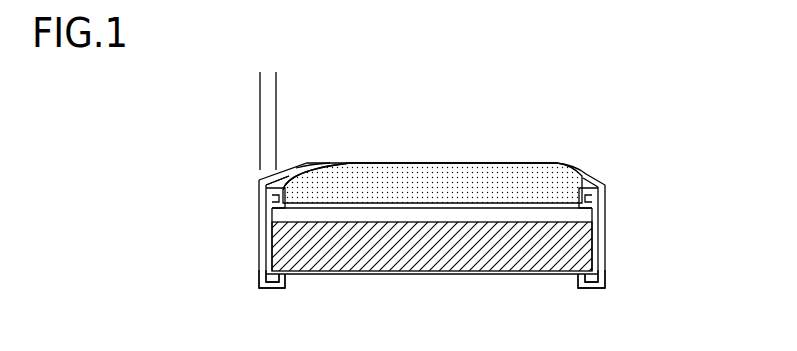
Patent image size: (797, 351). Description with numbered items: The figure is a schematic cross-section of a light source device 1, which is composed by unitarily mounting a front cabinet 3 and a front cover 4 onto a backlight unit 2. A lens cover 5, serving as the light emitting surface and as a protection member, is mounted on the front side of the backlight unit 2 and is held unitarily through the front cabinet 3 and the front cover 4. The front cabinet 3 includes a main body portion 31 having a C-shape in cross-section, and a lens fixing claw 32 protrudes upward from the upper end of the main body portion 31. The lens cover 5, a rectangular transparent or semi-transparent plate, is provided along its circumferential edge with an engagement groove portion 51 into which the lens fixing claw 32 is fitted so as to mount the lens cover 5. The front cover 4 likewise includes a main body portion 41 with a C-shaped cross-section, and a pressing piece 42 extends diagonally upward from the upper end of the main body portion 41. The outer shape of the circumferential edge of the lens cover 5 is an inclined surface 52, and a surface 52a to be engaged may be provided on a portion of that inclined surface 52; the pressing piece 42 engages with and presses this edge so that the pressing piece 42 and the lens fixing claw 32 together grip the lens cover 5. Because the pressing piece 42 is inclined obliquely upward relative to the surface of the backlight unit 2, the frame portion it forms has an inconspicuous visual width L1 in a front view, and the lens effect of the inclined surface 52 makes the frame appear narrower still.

The light source device 1 is at (614, 157).
The backlight unit 2 is at (424, 212).
The front cabinet 3 is at (424, 233).
The front cover 4 is at (408, 227).
The lens cover 5 is at (424, 145).
The main body portion 31 is at (272, 240).
The lens fixing claw 32 is at (272, 201).
The main body portion 41 is at (259, 279).
The pressing piece 42 is at (258, 178).
The engagement groove portion 51 is at (362, 163).
The inclined surface 52 is at (322, 139).
The surface to be engaged 52a is at (306, 163).
The visual width L1 is at (243, 90).